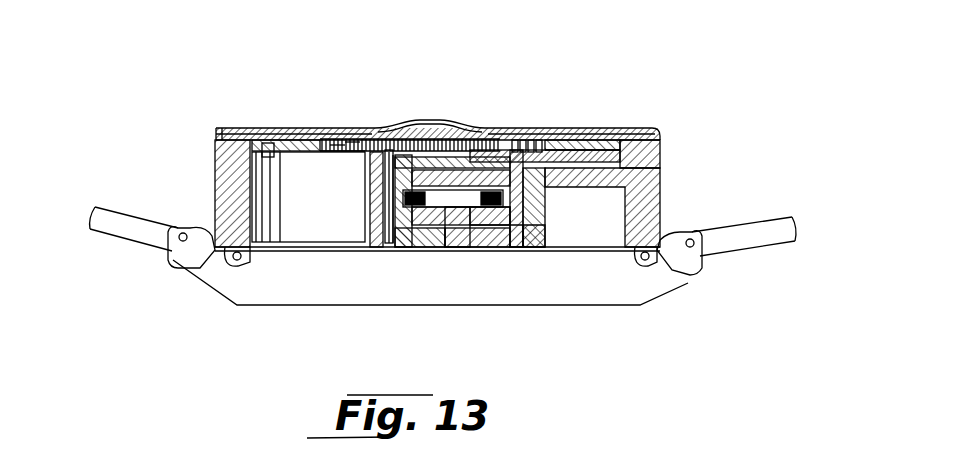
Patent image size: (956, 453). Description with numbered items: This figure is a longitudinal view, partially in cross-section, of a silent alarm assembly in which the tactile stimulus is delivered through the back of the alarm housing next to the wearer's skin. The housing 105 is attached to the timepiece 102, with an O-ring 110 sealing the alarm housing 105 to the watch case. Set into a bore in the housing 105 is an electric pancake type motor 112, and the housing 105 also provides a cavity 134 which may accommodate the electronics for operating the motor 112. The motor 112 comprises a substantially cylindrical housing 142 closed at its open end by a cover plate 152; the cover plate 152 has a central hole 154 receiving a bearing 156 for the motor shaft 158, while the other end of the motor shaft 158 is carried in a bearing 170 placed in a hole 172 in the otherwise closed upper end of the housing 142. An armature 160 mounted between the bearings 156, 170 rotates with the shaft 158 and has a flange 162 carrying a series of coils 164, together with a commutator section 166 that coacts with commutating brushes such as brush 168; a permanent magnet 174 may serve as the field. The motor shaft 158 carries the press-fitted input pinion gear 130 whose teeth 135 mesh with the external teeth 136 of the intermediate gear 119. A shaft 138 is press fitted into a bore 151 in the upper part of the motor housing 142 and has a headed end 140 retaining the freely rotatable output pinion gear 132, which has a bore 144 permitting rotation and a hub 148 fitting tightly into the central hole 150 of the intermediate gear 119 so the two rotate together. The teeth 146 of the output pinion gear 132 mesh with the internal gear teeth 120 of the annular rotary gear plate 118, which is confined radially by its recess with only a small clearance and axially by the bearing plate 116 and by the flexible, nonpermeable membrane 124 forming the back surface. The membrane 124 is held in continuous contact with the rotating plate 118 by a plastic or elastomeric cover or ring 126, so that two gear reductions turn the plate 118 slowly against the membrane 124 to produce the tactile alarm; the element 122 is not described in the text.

The timepiece 102 is at (265, 304).
The housing 105 is at (222, 178).
The O-ring 110 is at (208, 280).
The pancake type motor 112 is at (264, 198).
The bearing plate 116 is at (258, 154).
The annular rotary gear plate 118 is at (595, 138).
The intermediate gear 119 is at (605, 144).
The internal gear teeth 120 is at (331, 135).
The dome 122 is at (430, 130).
The flexible nonpermeable membrane 124 is at (270, 130).
The cover or ring 126 is at (236, 130).
The input pinion gear 130 is at (340, 135).
The output pinion gear 132 is at (541, 142).
The cavity 134 is at (655, 226).
The teeth 135 is at (347, 135).
The external teeth 136 is at (650, 158).
The shaft 138 is at (521, 142).
The headed end 140 is at (515, 142).
The motor housing 142 is at (545, 222).
The bore 144 is at (527, 142).
The teeth 146 is at (533, 142).
The hub 148 is at (528, 172).
The central hole 150 is at (492, 134).
The bore 151 is at (545, 185).
The cover plate 152 is at (524, 249).
The central hole 154 is at (412, 249).
The bearing 156 is at (389, 249).
The motor shaft 158 is at (374, 214).
The armature 160 is at (346, 249).
The flange 162 is at (458, 249).
The coils 164 is at (470, 249).
The commutator section 166 is at (424, 249).
The brush 168 is at (402, 249).
The bearing 170 is at (374, 190).
The hole 172 is at (368, 174).
The permanent magnet 174 is at (512, 249).